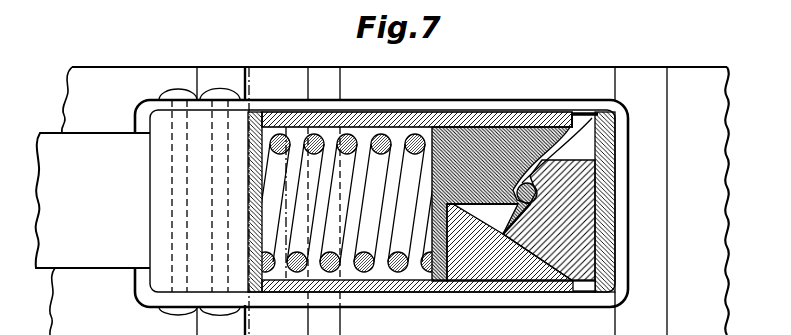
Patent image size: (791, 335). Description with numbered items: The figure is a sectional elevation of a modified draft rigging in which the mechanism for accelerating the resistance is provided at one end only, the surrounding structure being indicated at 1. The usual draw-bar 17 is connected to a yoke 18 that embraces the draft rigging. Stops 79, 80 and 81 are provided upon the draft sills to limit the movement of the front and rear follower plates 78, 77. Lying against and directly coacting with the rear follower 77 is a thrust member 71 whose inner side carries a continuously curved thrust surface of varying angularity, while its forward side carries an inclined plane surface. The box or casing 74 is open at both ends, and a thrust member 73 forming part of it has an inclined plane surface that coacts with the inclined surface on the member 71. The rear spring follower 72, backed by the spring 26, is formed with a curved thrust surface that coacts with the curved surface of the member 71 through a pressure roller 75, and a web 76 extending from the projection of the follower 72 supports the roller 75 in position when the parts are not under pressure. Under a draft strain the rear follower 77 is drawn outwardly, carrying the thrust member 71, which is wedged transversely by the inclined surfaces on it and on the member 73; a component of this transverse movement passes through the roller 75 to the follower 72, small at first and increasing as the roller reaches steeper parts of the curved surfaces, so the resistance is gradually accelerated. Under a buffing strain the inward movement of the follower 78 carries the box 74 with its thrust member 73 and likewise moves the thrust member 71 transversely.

The body 1 is at (712, 59).
The draw-bar 17 is at (93, 200).
The yoke 18 is at (515, 110).
The spring 26 is at (383, 136).
The thrust member 71 is at (595, 197).
The rear spring follower 72 is at (462, 136).
The thrust member 73 is at (469, 240).
The box or casing 74 is at (373, 281).
The pressure roller 75 is at (579, 124).
The web 76 is at (518, 209).
The rear follower plate 77 is at (612, 167).
The front follower plate 78 is at (249, 160).
The stop 79 is at (632, 78).
The stop 80 is at (222, 76).
The stop 81 is at (326, 76).